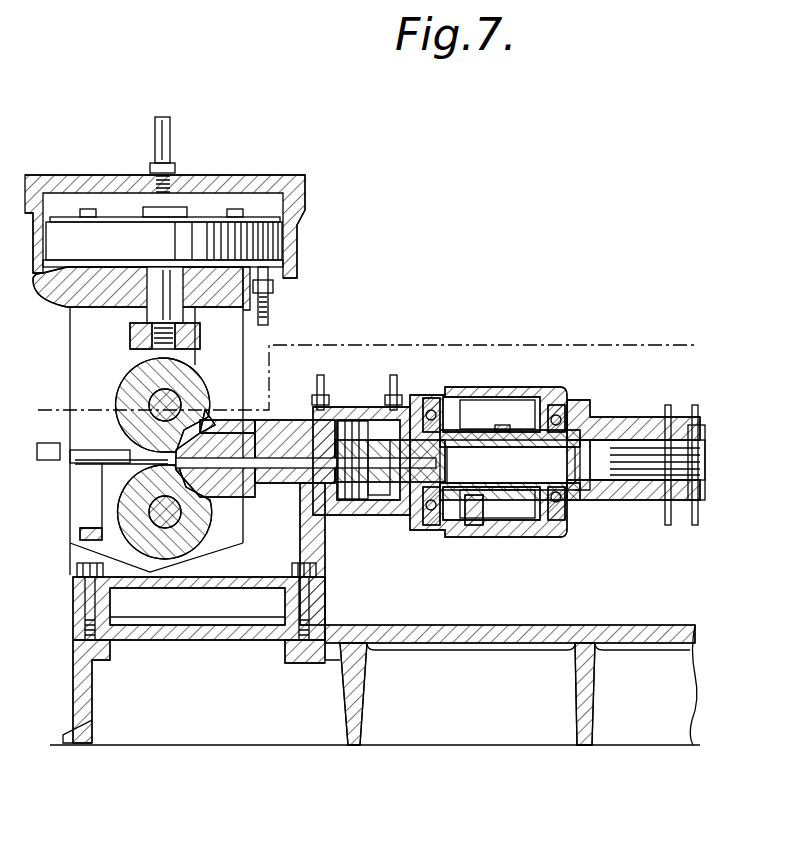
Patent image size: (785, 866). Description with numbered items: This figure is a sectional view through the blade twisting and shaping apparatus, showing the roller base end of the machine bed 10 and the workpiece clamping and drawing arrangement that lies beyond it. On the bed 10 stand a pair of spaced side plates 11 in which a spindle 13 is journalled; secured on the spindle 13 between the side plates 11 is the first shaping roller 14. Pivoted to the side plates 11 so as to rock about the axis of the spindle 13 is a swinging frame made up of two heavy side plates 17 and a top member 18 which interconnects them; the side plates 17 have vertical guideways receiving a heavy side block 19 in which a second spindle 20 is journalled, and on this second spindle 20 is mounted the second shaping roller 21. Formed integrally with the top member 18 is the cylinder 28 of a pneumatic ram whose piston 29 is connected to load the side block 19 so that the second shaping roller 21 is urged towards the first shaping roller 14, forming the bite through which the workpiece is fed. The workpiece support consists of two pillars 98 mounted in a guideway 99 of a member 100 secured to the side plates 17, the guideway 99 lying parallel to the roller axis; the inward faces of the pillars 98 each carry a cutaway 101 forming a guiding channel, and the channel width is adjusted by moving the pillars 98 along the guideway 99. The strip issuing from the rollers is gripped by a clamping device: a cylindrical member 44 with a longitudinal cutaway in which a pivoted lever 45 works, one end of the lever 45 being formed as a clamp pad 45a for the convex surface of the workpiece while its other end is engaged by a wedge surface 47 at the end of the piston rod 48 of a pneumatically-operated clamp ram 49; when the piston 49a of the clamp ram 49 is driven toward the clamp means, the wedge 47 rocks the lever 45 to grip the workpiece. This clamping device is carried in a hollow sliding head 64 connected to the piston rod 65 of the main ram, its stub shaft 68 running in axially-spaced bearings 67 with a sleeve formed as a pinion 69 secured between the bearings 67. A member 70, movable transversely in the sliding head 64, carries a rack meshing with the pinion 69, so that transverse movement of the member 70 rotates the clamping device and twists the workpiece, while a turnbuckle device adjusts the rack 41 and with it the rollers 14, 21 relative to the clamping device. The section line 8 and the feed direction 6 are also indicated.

The feed direction arrow 6 is at (35, 478).
The section line 8 is at (52, 418).
The machine bed 10 is at (485, 632).
The side plates 11 is at (312, 549).
The spindle 13 is at (186, 510).
The first shaping roller 14 is at (182, 548).
The side plates 17 is at (277, 301).
The top member 18 is at (84, 299).
The side block 19 is at (130, 335).
The second spindle 20 is at (157, 398).
The second shaping roller 21 is at (128, 398).
The cylinder 28 is at (288, 246).
The piston 29 is at (284, 218).
The rack 41 is at (112, 452).
The cylindrical member 44 is at (218, 498).
The pivoted lever 45 is at (242, 412).
The clamp pad 45a is at (212, 405).
The wedge surface 47 is at (263, 486).
The piston rod 48 is at (293, 484).
The clamp ram 49 is at (349, 408).
The piston 49a is at (355, 500).
The sliding head 64 is at (500, 390).
The piston rod 65 is at (697, 486).
The bearings 67 is at (430, 404).
The stub shaft 68 is at (518, 492).
The pinion 69 is at (474, 426).
The member 70 is at (472, 527).
The pillars 98 is at (94, 524).
The guideway 99 is at (78, 568).
The member 100 is at (84, 578).
The cutaway 101 is at (88, 498).